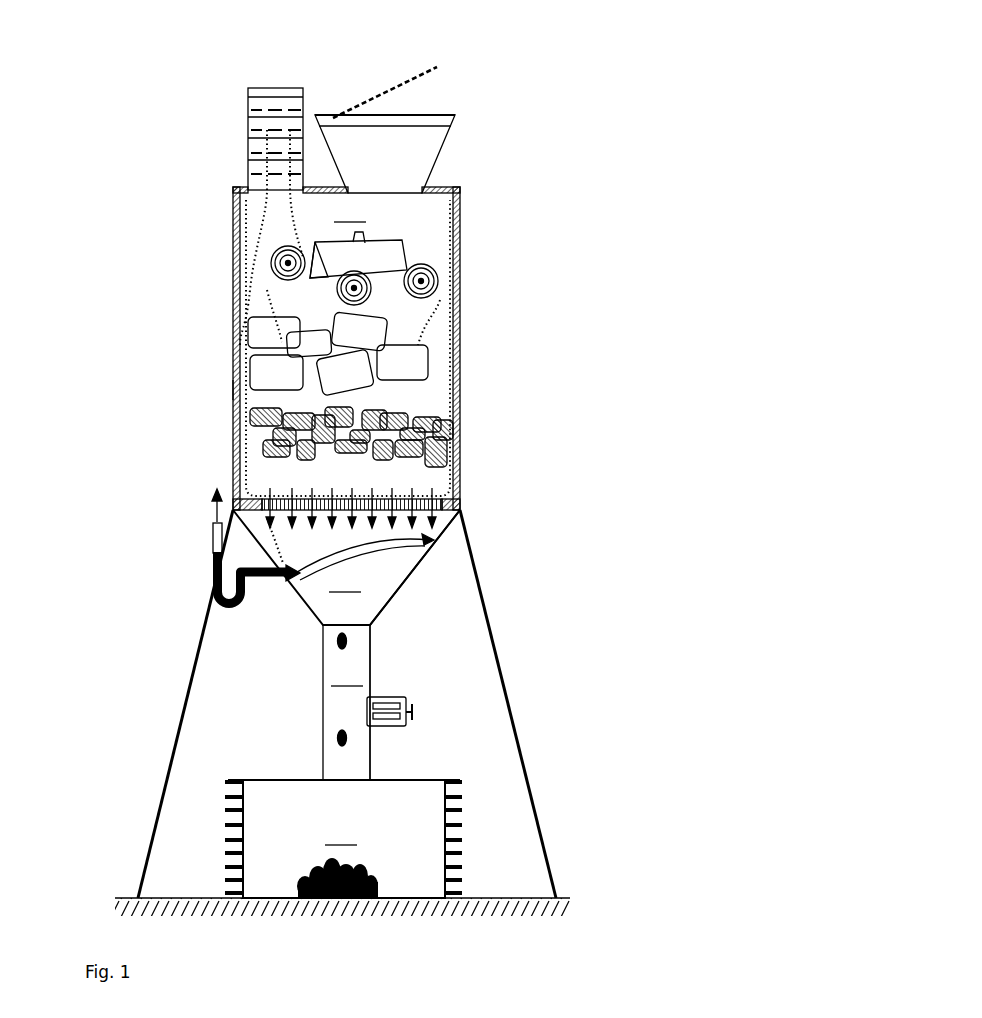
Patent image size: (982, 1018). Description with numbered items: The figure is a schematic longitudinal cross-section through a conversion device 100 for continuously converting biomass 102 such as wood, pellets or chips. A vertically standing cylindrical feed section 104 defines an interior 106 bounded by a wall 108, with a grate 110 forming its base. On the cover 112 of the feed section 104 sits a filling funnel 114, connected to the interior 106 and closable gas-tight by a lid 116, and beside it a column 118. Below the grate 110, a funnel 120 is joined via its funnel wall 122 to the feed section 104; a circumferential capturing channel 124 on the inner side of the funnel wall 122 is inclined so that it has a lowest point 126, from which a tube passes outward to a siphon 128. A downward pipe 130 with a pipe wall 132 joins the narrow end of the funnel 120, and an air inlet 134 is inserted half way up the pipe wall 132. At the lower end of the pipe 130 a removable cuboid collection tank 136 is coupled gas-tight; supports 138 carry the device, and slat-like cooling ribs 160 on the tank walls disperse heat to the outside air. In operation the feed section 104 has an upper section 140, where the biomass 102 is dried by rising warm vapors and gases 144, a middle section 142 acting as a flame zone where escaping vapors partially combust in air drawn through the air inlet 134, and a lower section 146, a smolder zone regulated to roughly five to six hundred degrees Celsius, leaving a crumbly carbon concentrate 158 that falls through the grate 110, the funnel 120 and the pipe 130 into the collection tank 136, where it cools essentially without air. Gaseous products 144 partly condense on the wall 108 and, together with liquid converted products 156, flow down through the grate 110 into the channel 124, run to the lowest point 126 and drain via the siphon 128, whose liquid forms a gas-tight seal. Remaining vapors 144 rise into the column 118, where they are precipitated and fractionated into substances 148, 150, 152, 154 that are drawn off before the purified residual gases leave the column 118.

The conversion device 100 is at (547, 66).
The biomass 102 is at (445, 266).
The feed section 104 is at (460, 184).
The interior 106 is at (350, 212).
The wall 108 is at (460, 342).
The grate 110 is at (458, 491).
The cover 112 is at (440, 182).
The filling funnel 114 is at (437, 93).
The lid 116 is at (413, 70).
The column 118 is at (256, 88).
The funnel 120 is at (346, 567).
The funnel wall 122 is at (440, 548).
The capturing channel 124 is at (432, 541).
The lowest point 126 is at (214, 558).
The siphon 128 is at (214, 586).
The pipe 130 is at (346, 702).
The pipe wall 132 is at (370, 645).
The air inlet 134 is at (407, 698).
The collection tank 136 is at (344, 839).
The supports 138 is at (162, 812).
The upper section 140 is at (225, 195).
The middle section 142 is at (225, 294).
The vapors and gases 144 is at (262, 206).
The lower section 146 is at (225, 392).
The fractionated substance 148 is at (247, 103).
The fractionated substance 150 is at (247, 126).
The fractionated substance 152 is at (247, 151).
The fractionated substance 154 is at (247, 171).
The liquid converted products 156 is at (235, 390).
The carbon concentrate 158 is at (450, 867).
The cooling ribs 160 is at (226, 865).